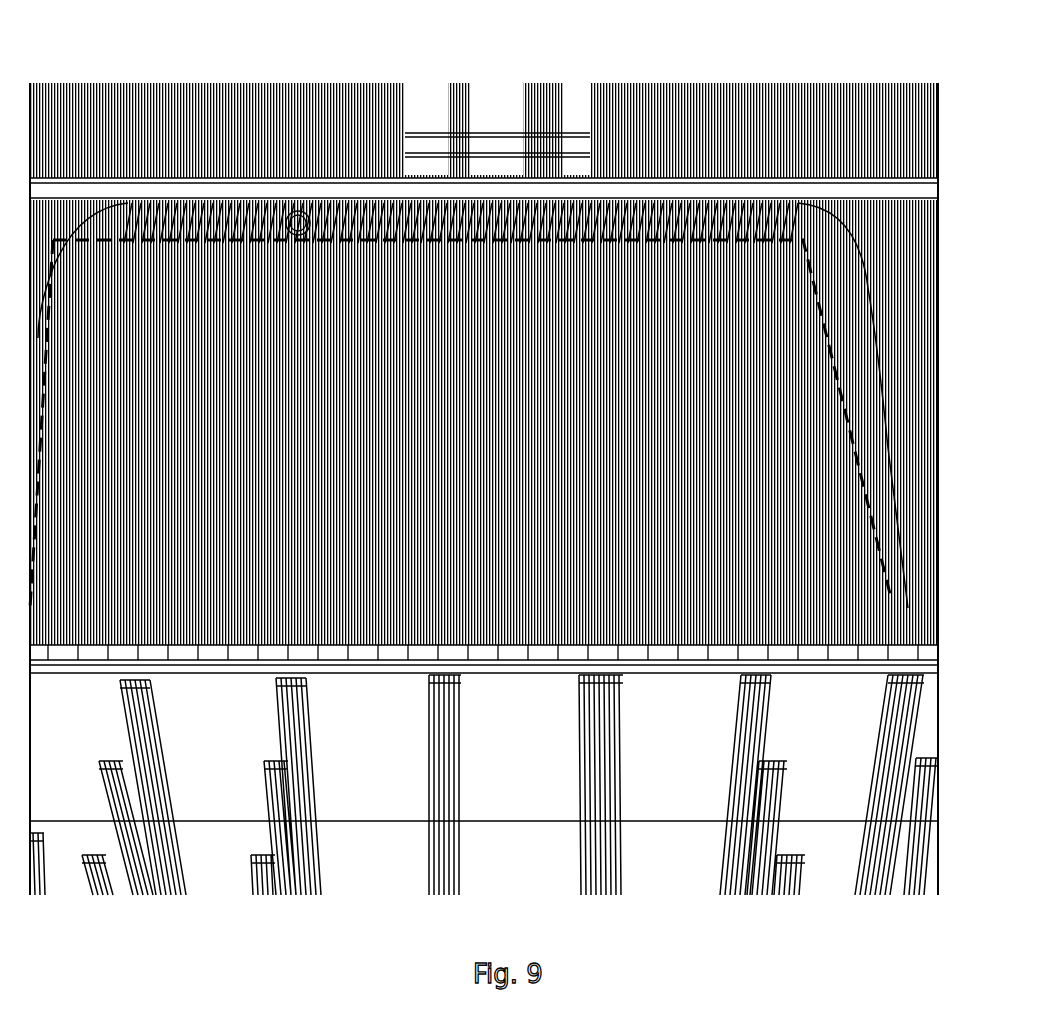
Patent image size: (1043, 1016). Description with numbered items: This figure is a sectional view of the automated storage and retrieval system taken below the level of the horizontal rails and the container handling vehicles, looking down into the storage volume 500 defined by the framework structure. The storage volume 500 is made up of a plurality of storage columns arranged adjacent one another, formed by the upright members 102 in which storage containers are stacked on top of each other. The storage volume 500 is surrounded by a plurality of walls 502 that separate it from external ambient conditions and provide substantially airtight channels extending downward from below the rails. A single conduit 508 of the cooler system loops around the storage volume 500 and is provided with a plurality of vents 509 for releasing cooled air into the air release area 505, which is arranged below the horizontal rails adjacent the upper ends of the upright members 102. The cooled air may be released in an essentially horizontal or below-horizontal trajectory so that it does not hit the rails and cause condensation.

The storage volume 500 is at (412, 331).
The conduit 508 is at (188, 200).
The vents 509 is at (289, 205).
The air release area 505 is at (590, 230).
The walls 502 is at (214, 852).
The upright members 102 is at (736, 848).